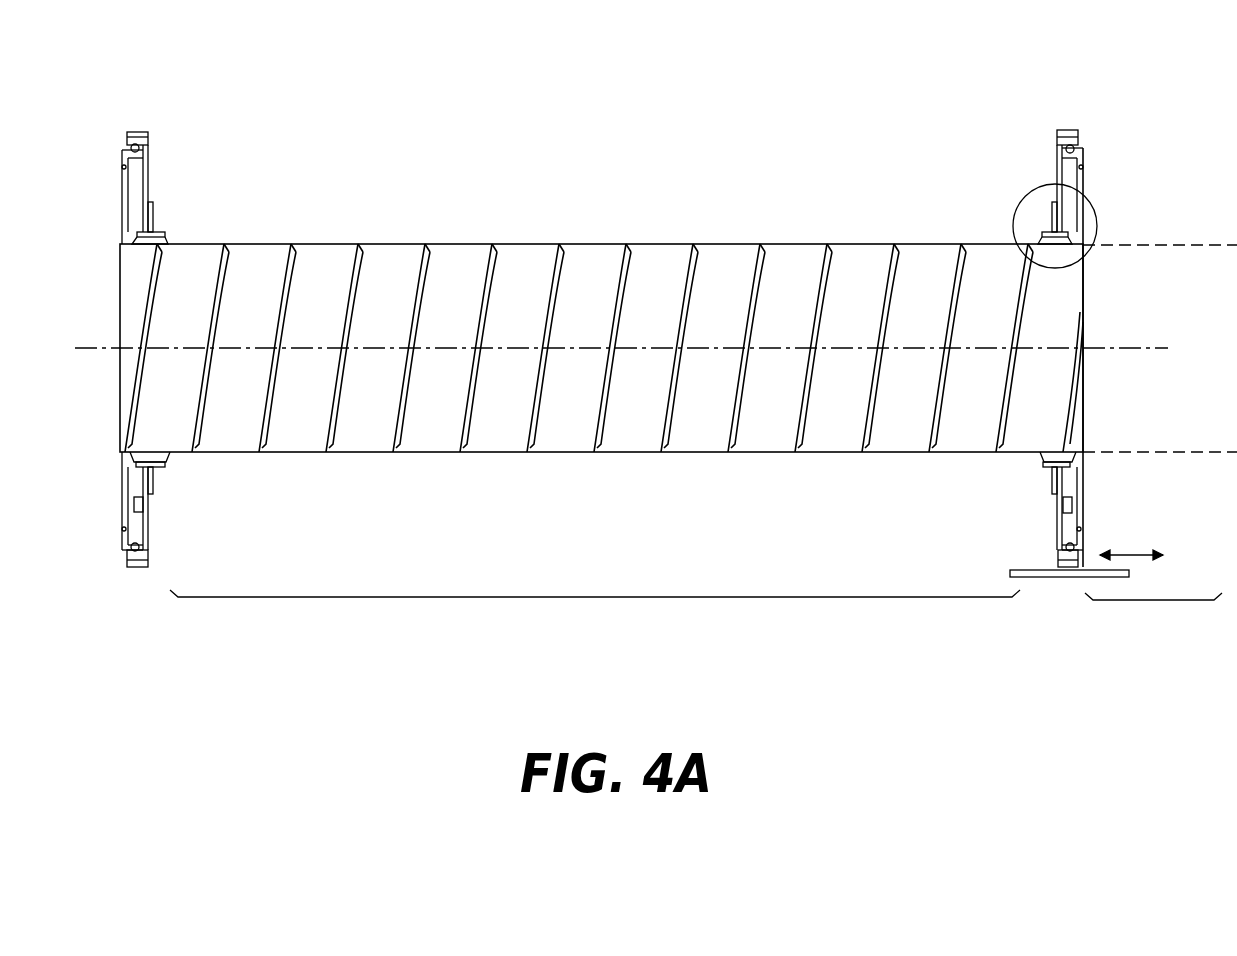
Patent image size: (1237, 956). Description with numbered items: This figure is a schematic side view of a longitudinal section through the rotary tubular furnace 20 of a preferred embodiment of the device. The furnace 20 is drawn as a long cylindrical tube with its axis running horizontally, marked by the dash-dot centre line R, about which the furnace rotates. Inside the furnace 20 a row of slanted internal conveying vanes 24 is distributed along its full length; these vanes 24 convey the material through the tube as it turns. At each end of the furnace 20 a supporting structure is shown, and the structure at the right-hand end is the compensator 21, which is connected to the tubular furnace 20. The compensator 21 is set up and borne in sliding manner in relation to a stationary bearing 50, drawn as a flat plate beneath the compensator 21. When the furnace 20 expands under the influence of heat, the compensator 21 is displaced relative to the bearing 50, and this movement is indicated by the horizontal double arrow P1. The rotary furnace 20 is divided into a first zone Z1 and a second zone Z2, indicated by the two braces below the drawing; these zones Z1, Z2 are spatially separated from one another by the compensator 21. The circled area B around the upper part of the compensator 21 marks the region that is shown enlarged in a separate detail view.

The tubular furnace 20 is at (601, 325).
The compensator 21 is at (1079, 117).
The internal conveying vanes 24 is at (665, 442).
The stationary bearing 50 is at (1048, 580).
The rotation axis R is at (630, 349).
The area B is at (1100, 275).
The double arrow P1 is at (1131, 543).
The first zone Z1 is at (1152, 601).
The second zone Z2 is at (597, 598).